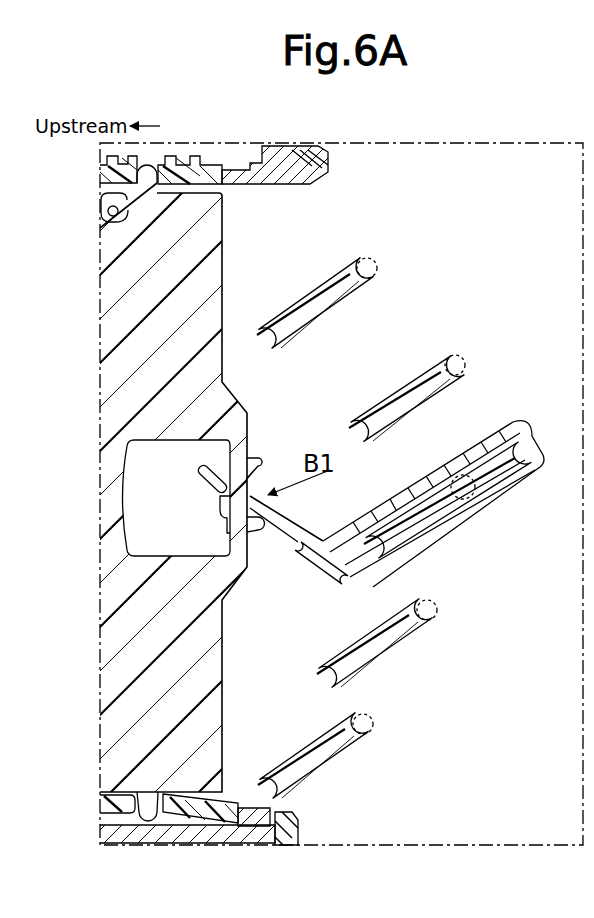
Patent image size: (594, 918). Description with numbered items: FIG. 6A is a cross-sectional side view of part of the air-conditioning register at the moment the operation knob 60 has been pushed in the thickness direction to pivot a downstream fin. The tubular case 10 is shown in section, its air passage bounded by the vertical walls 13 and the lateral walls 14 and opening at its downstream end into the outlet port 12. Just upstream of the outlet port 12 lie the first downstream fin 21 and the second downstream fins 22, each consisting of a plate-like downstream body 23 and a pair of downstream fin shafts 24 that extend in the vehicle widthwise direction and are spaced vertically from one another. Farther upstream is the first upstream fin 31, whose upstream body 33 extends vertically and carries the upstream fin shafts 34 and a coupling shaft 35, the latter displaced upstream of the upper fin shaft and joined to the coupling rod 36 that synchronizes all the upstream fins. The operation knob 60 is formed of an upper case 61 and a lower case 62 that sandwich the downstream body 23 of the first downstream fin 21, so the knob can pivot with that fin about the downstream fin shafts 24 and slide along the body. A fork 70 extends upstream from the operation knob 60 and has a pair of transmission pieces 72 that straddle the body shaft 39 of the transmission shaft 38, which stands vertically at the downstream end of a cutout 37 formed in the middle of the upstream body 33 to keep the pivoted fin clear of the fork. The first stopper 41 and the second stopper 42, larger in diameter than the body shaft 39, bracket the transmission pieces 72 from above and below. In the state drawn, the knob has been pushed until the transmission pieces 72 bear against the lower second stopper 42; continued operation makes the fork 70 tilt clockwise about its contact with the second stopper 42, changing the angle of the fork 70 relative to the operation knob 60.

The case 10 is at (250, 250).
The outlet port 12 is at (312, 186).
The vertical walls 13 is at (196, 188).
The lateral walls 14 is at (240, 176).
The first downstream fin 21 is at (437, 517).
The second downstream fins 22 is at (359, 528).
The downstream body 23 is at (352, 433).
The downstream fin shafts 24 is at (385, 266).
The first upstream fin 31 is at (297, 459).
The upstream body 33 is at (100, 333).
The upstream fin shafts 34 is at (148, 170).
The coupling shaft 35 is at (100, 207).
The coupling rod 36 is at (103, 196).
The cutout 37 is at (148, 497).
The transmission shaft 38 is at (215, 450).
The body shaft 39 is at (218, 500).
The first stopper 41 is at (258, 462).
The second stopper 42 is at (257, 530).
The operation knob 60 is at (449, 486).
The upper case 61 is at (485, 440).
The lower case 62 is at (503, 497).
The fork 70 is at (320, 563).
The transmission pieces 72 is at (200, 478).